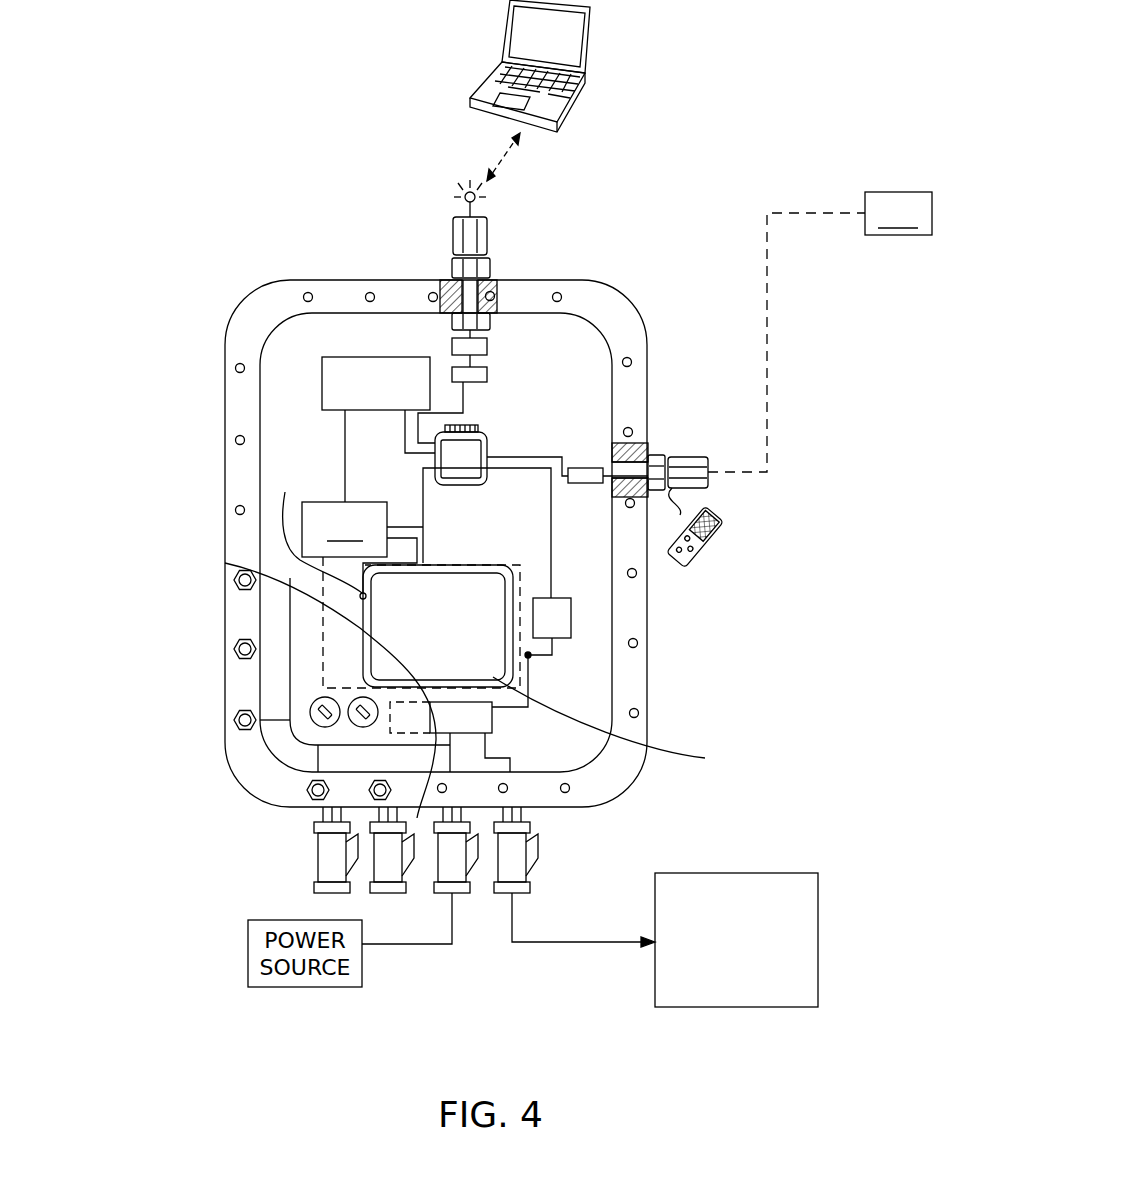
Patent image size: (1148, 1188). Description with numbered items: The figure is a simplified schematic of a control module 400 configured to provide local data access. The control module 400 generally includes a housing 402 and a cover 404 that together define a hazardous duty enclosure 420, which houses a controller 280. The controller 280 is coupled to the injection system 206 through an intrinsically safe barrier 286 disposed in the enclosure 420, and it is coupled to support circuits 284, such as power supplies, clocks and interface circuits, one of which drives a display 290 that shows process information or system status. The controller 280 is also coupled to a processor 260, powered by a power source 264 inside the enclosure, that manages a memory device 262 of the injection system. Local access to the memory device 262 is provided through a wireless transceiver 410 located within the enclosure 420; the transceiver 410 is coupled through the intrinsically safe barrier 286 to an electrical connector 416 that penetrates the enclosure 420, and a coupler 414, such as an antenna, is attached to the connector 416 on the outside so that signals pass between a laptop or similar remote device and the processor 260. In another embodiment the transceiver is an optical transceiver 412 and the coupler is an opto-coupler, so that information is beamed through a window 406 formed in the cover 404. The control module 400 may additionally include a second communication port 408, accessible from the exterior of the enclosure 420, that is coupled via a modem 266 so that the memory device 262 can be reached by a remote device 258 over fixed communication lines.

The control module 400 is at (242, 165).
The housing 402 is at (337, 279).
The cover 404 is at (243, 605).
The window 406 is at (385, 670).
The second communication port 408 is at (658, 445).
The wireless transceiver 410 is at (493, 372).
The optical transceiver 412 is at (322, 530).
The coupler 414 is at (446, 206).
The electrical connector 416 is at (490, 280).
The hazardous duty enclosure 420 is at (214, 358).
The remote device 258 is at (820, 332).
The processor 260 is at (495, 498).
The memory device 262 is at (478, 425).
The power source 264 is at (556, 640).
The modem 266 is at (583, 468).
The controller 280 is at (345, 357).
The support circuits 284 is at (411, 595).
The intrinsically safe barrier 286 is at (490, 345).
The display 290 is at (621, 723).
The injection system 206 is at (665, 940).